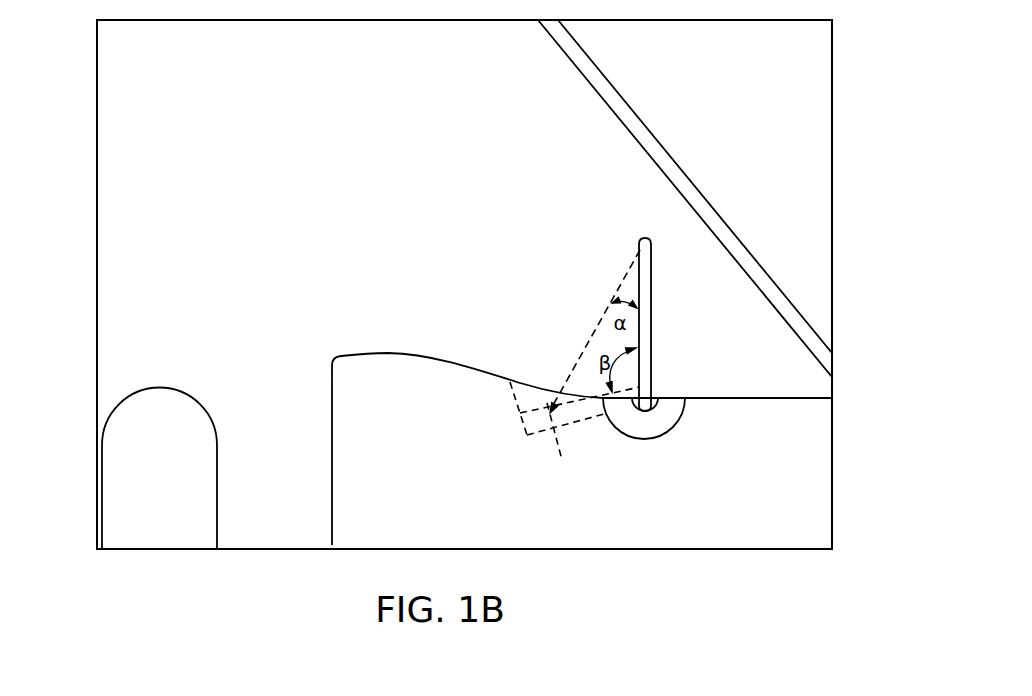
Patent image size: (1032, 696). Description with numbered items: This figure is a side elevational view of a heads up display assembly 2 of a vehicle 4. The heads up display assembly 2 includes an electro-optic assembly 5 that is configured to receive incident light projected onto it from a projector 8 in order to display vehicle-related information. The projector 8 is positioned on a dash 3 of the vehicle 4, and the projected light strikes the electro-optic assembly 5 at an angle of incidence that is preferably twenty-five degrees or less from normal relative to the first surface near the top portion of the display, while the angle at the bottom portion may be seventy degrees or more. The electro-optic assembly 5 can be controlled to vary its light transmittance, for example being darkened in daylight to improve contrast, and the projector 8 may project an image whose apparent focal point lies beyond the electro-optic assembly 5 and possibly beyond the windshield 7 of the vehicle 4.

The heads up display assembly 2 is at (602, 268).
The dash 3 is at (417, 362).
The vehicle 4 is at (768, 96).
The electro-optic assembly 5 is at (653, 318).
The windshield 7 is at (780, 290).
The projector 8 is at (562, 460).